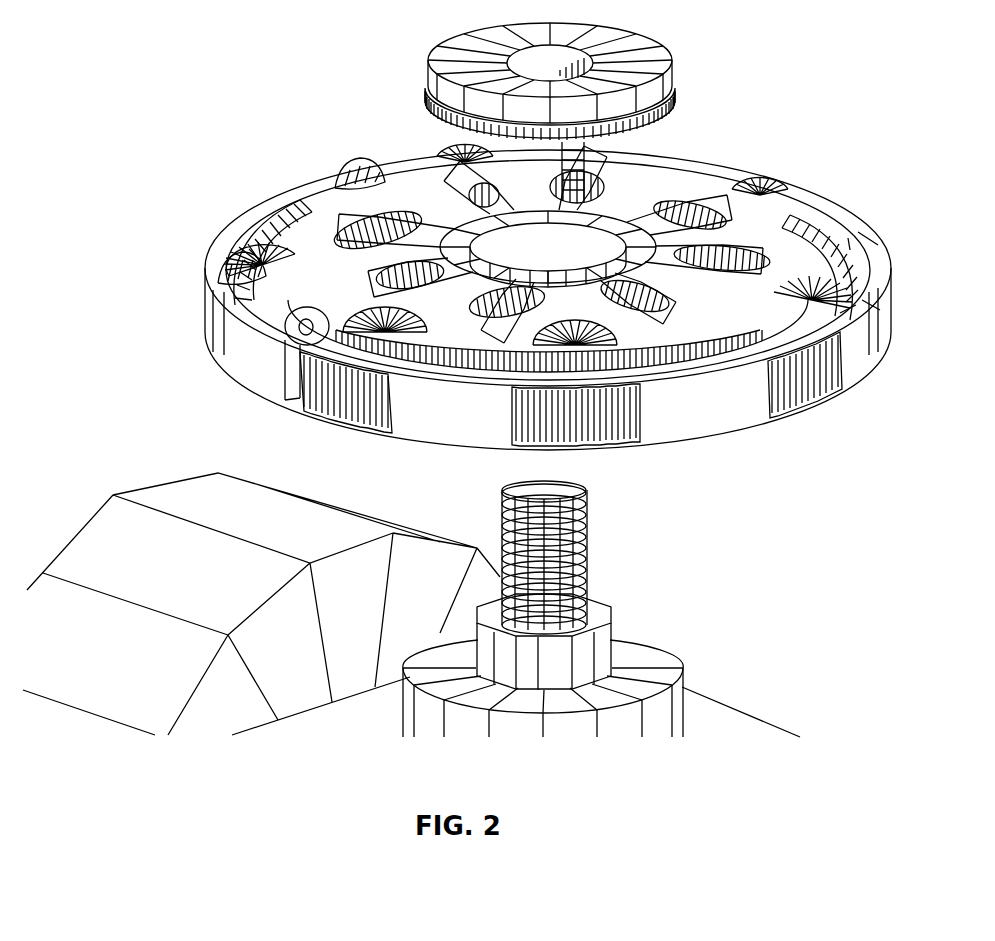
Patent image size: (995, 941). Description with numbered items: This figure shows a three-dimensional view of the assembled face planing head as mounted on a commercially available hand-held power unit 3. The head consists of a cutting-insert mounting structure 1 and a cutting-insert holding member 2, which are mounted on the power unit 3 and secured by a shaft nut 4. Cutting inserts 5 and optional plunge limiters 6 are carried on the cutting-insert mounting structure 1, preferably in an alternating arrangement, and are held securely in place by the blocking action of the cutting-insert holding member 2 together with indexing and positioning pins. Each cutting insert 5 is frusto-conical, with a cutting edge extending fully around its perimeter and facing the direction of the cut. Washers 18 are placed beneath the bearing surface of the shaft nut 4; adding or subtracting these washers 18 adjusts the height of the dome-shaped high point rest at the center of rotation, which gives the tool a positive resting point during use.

The cutting-insert mounting structure 1 is at (710, 400).
The cutting-insert holding member 2 is at (600, 410).
The power unit 3 is at (596, 580).
The shaft nut 4 is at (637, 44).
The cutting insert 5 is at (362, 165).
The plunge limiter 6 is at (226, 270).
The washers 18 is at (664, 119).